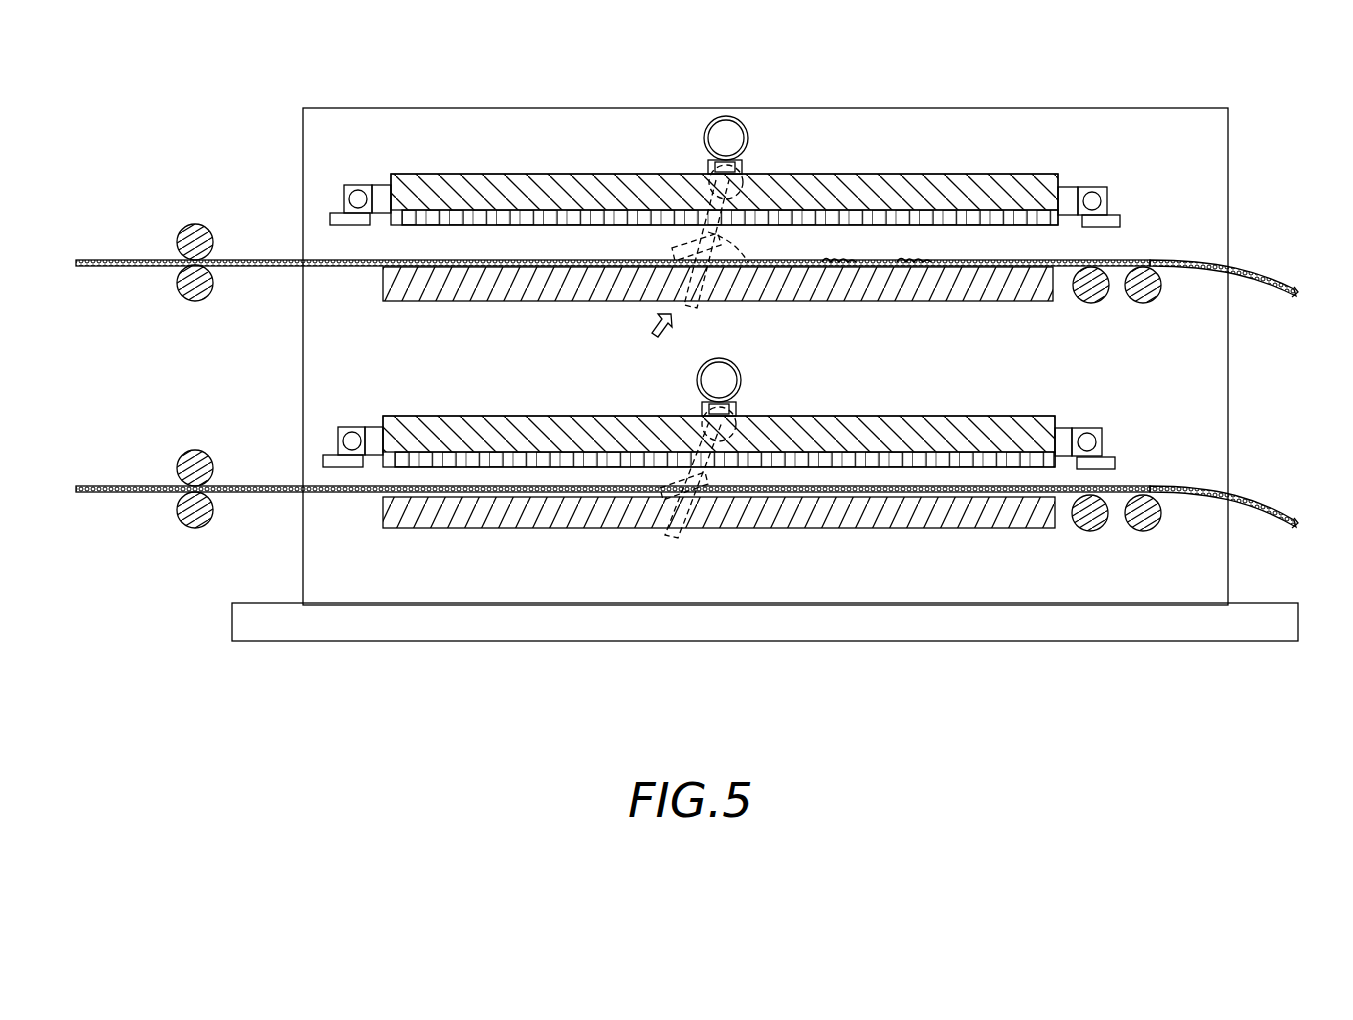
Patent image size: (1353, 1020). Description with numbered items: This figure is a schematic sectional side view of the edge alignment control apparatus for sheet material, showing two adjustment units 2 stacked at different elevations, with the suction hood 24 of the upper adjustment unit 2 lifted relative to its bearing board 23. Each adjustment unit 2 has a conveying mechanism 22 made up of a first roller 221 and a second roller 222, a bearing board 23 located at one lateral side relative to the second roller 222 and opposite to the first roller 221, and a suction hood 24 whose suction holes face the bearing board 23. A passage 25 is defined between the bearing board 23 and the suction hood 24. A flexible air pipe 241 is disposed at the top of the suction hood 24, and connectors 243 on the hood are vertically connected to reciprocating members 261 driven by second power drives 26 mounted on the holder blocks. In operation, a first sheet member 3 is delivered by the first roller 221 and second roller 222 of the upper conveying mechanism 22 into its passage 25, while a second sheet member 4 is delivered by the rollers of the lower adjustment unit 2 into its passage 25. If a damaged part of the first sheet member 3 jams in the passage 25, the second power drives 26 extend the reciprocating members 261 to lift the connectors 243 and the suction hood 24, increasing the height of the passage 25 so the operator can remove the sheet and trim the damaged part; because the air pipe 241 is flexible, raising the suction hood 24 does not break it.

The adjustment unit 2 is at (462, 168).
The suction hood 24 is at (627, 186).
The air pipe 241 is at (726, 116).
The connector 243 is at (736, 165).
The first sheet member 3 is at (283, 259).
The passage 25 is at (390, 253).
The bearing board 23 is at (521, 290).
The second power drive 26 is at (672, 294).
The reciprocating member 261 is at (740, 262).
The conveying mechanism 22 is at (1212, 287).
The first roller 221 is at (1148, 283).
The second roller 222 is at (1095, 296).
The second sheet member 4 is at (266, 485).